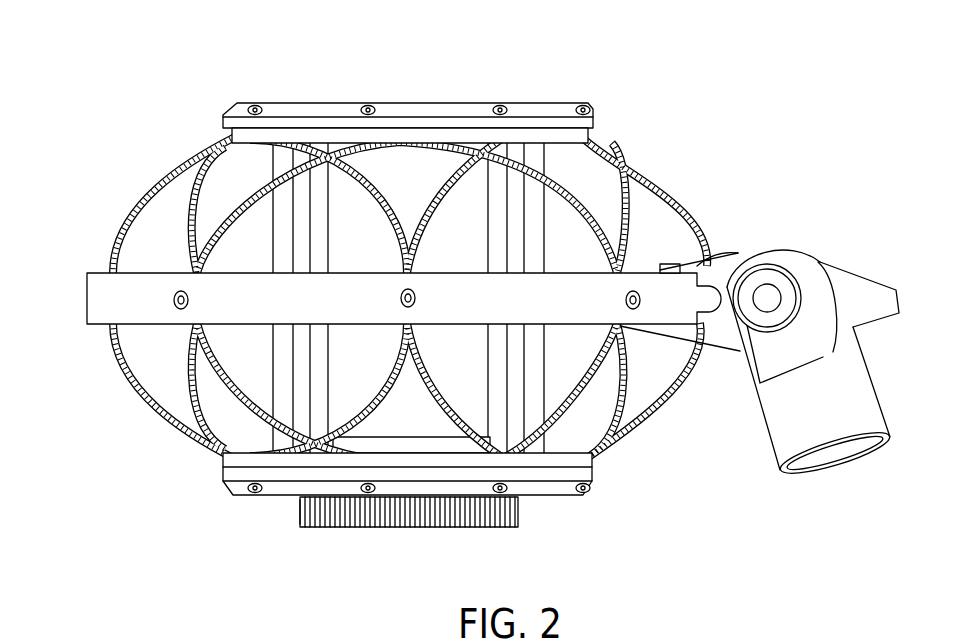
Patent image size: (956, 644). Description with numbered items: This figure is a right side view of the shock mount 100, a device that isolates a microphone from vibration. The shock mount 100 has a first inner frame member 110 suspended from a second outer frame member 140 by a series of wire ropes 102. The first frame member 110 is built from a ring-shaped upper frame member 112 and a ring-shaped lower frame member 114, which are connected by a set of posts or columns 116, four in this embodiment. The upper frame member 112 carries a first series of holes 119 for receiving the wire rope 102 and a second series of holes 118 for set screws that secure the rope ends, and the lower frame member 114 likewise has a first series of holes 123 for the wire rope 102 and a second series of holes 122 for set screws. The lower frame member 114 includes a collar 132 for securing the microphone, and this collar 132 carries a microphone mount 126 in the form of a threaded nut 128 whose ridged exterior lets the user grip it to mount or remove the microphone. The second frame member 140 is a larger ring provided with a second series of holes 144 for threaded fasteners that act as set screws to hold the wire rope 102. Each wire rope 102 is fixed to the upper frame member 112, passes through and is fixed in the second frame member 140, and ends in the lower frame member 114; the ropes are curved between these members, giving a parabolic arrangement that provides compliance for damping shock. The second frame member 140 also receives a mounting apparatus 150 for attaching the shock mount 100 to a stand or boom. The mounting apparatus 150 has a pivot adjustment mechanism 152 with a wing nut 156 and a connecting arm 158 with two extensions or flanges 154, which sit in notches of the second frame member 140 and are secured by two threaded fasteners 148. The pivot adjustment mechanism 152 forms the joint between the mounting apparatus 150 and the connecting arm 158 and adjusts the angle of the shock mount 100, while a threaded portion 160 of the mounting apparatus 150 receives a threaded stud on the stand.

The shock mount 100 is at (643, 270).
The wire ropes 102 is at (693, 158).
The first inner frame member 110 is at (430, 110).
The upper frame member 112 is at (323, 103).
The lower frame member 114 is at (570, 497).
The posts or columns 116 is at (320, 204).
The second series of holes 118 is at (258, 105).
The first series of holes 119 is at (223, 123).
The second series of holes 122 is at (258, 495).
The first series of holes 123 is at (238, 462).
The microphone mount 126 is at (478, 528).
The threaded nut 128 is at (317, 528).
The collar 132 is at (420, 447).
The second outer frame member 140 is at (107, 302).
The second series of holes 144 is at (190, 302).
The threaded fasteners 148 is at (708, 250).
The mounting apparatus 150 is at (777, 426).
The pivot adjustment mechanism 152 is at (766, 292).
The extensions or flanges 154 is at (715, 265).
The wing nut 156 is at (883, 290).
The connecting arm 158 is at (745, 258).
The threaded portion 160 is at (847, 452).